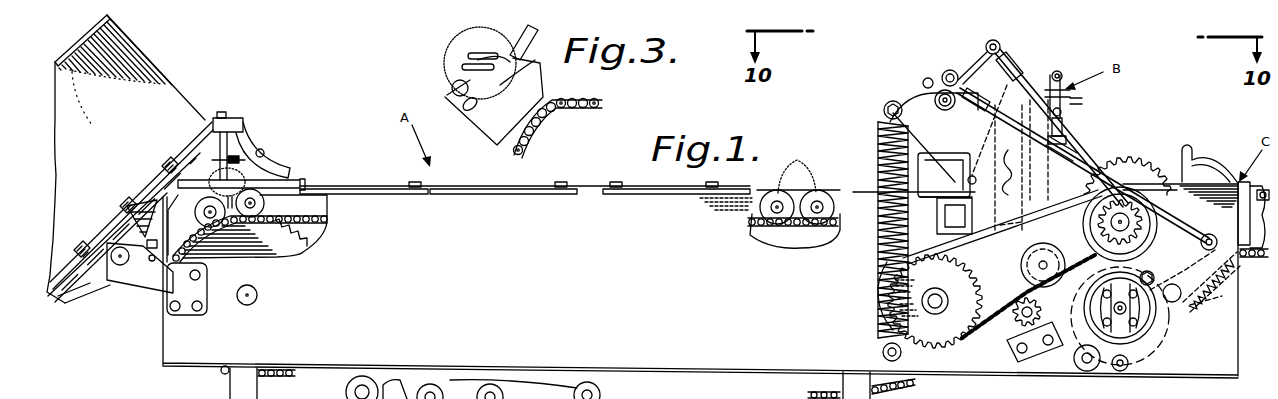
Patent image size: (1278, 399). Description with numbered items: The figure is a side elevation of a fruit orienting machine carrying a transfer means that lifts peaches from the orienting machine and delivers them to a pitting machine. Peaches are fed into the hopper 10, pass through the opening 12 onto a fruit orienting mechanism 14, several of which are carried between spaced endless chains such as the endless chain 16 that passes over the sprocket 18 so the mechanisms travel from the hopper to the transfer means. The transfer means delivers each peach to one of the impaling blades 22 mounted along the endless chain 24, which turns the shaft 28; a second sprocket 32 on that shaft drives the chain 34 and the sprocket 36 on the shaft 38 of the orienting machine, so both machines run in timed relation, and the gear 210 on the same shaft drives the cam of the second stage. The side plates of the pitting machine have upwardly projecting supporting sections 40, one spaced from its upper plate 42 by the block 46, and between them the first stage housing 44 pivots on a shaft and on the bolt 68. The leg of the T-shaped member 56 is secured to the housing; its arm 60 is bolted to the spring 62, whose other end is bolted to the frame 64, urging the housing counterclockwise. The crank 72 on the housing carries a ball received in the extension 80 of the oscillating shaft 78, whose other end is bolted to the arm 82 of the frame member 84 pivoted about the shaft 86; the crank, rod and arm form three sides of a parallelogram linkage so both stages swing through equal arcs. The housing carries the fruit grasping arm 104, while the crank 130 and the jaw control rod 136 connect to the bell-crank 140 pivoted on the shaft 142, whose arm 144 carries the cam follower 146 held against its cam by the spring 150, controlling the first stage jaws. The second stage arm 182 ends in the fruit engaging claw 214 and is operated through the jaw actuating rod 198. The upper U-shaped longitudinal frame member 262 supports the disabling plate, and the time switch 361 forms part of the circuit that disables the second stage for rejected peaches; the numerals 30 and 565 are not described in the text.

In FIG. 1, the hopper 10 is at (157, 88).
In FIG. 1, the opening 12 is at (172, 158).
In FIG. 1, the fruit orienting mechanism 14 is at (278, 199).
In FIG. 1, the endless chain 16 is at (312, 227).
In FIG. 1, the sprocket 18 is at (240, 238).
In FIG. 3, the impaling blade 22 is at (490, 126).
In FIG. 1, the impaling blade 22 is at (1216, 163).
In FIG. 3, the endless chain 24 is at (606, 104).
In FIG. 1, the endless chain 24 is at (1258, 221).
In FIG. 1, the shaft 28 is at (1170, 218).
In FIG. 1, the drive housing 30 is at (1222, 341).
In FIG. 1, the second sprocket 32 is at (1128, 216).
In FIG. 1, the chain 34 is at (1010, 336).
In FIG. 1, the sprocket 36 is at (990, 269).
In FIG. 1, the shaft 38 is at (927, 302).
In FIG. 1, the transfer means supporting section 40 is at (946, 186).
In FIG. 1, the upper plate 42 is at (944, 175).
In FIG. 1, the first stage transfer means housing 44 is at (920, 80).
In FIG. 1, the block 46 is at (976, 155).
In FIG. 1, the T-shaped member 56 is at (885, 101).
In FIG. 1, the arm 60 is at (906, 100).
In FIG. 1, the spring 62 is at (877, 132).
In FIG. 1, the frame 64 is at (763, 350).
In FIG. 1, the bolt 68 is at (948, 110).
In FIG. 1, the crank 72 is at (985, 50).
In FIG. 1, the oscillating shaft 78 is at (1018, 85).
In FIG. 1, the extension 80 is at (605, 390).
In FIG. 1, the arm 82 is at (1060, 270).
In FIG. 1, the frame member 84 is at (1001, 221).
In FIG. 1, the shaft 86 is at (1021, 260).
In FIG. 1, the fruit grasping arm 104 is at (1014, 165).
In FIG. 1, the crank 130 is at (946, 72).
In FIG. 1, the jaw control rod 136 is at (1065, 165).
In FIG. 1, the bell-crank 140 is at (1232, 281).
In FIG. 1, the shaft 142 is at (1168, 305).
In FIG. 1, the arm 144 is at (1190, 258).
In FIG. 1, the cam follower 146 is at (1177, 270).
In FIG. 1, the spring 150 is at (1224, 296).
In FIG. 3, the fruit grasping arm 182 is at (533, 32).
In FIG. 1, the jaw actuating rod 198 is at (1062, 128).
In FIG. 1, the gear 210 is at (1142, 168).
In FIG. 3, the fruit engaging claw 214 is at (470, 52).
In FIG. 1, the upper U-shaped longitudinal frame member 262 is at (942, 228).
In FIG. 1, the time switch 361 is at (1135, 327).
In FIG. 1, the clutch 565 is at (1107, 294).